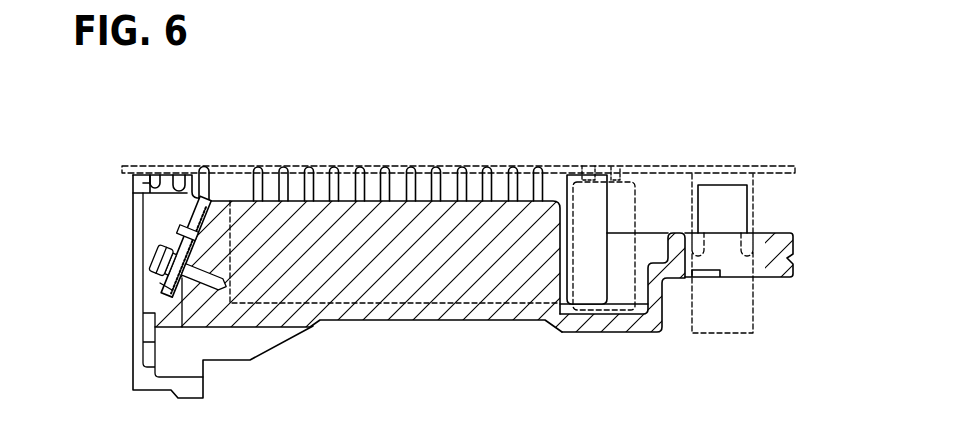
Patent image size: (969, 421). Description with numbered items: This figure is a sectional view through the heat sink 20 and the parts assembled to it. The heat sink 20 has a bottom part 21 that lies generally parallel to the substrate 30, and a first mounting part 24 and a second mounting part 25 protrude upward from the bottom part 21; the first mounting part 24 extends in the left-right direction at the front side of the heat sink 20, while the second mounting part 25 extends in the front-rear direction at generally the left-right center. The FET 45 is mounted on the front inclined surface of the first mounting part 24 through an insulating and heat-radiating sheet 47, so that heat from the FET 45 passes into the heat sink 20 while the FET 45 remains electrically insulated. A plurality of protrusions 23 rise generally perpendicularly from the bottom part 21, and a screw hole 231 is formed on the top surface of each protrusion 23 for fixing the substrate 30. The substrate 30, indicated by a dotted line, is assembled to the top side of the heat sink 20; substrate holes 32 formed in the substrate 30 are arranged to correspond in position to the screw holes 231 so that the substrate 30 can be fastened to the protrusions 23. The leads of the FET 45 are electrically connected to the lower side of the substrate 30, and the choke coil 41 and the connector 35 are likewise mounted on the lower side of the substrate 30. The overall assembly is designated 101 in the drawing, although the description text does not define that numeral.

The heat sink 20 is at (398, 309).
The bottom part 21 is at (585, 318).
The protrusion 23 is at (140, 183).
The first mounting part 24 is at (182, 257).
The second mounting part 25 is at (394, 218).
The substrate 30 is at (746, 166).
The substrate hole 32 is at (164, 168).
The connector 35 is at (723, 335).
The choke coil 41 is at (610, 318).
The FET 45 is at (193, 217).
The insulating and heat-radiating sheet 47 is at (156, 282).
The circuit board assembly 101 is at (794, 309).
The screw hole 231 is at (162, 190).